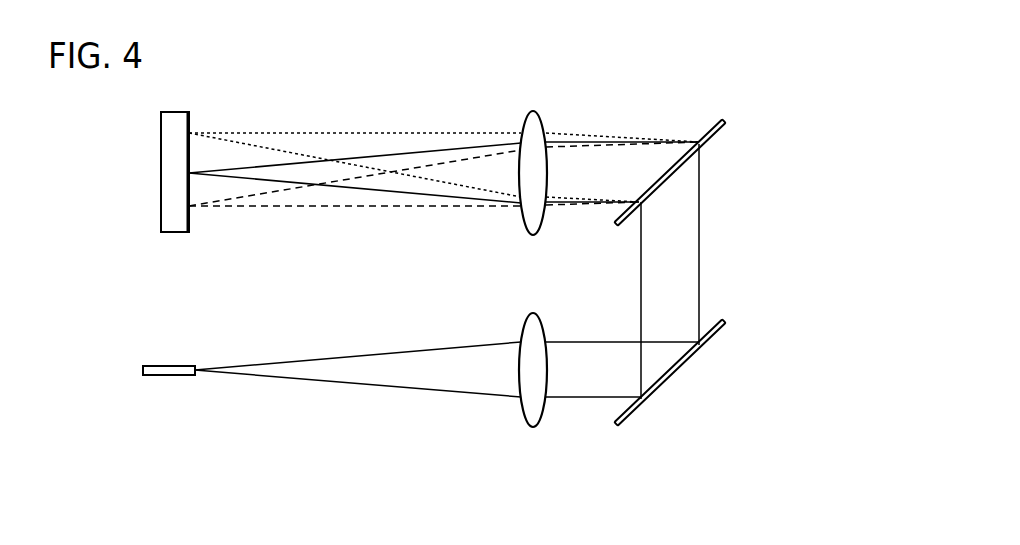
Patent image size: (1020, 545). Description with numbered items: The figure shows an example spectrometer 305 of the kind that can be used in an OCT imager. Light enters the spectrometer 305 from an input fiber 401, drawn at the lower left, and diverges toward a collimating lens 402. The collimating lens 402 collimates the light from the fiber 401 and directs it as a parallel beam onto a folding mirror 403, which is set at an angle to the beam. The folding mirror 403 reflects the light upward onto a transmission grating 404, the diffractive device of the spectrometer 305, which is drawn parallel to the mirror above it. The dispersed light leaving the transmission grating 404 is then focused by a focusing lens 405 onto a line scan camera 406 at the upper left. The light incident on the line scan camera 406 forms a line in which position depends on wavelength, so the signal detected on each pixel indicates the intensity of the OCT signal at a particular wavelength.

The spectrometer 305 is at (627, 67).
The input fiber 401 is at (174, 366).
The collimating lens 402 is at (536, 313).
The folding mirror 403 is at (727, 325).
The transmission grating 404 is at (727, 125).
The focusing lens 405 is at (535, 112).
The line scan camera 406 is at (175, 233).